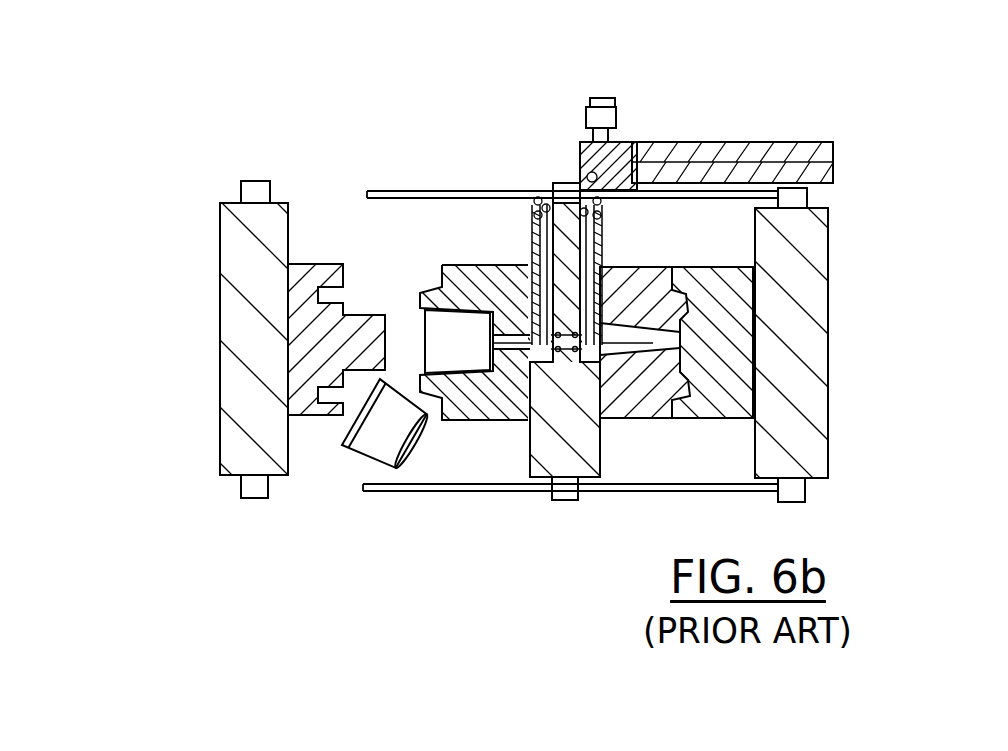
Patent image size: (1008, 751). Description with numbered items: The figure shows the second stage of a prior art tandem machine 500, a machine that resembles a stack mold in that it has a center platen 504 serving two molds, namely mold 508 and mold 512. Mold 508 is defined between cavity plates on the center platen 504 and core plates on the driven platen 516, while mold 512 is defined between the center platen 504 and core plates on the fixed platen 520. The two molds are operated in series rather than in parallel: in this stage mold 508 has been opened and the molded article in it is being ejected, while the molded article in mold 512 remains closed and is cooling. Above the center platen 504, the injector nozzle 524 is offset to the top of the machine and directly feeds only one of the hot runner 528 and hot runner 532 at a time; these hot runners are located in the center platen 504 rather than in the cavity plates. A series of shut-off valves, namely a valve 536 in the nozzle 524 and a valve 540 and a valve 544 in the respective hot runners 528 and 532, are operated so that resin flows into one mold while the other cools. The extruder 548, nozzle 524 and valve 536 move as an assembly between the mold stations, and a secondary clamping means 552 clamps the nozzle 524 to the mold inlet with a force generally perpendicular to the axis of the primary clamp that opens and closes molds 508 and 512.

The tandem machine 500 is at (183, 332).
The center platen 504 is at (546, 462).
The mold 508 is at (457, 250).
The mold 512 is at (632, 257).
The driven platen 516 is at (220, 427).
The fixed platen 520 is at (830, 290).
The injector nozzle 524 is at (580, 153).
The hot runner 528 is at (532, 240).
The hot runner 532 is at (603, 238).
The valve 536 is at (582, 188).
The valve 540 is at (534, 197).
The valve 544 is at (637, 141).
The extruder 548 is at (772, 141).
The secondary clamping means 552 is at (602, 96).